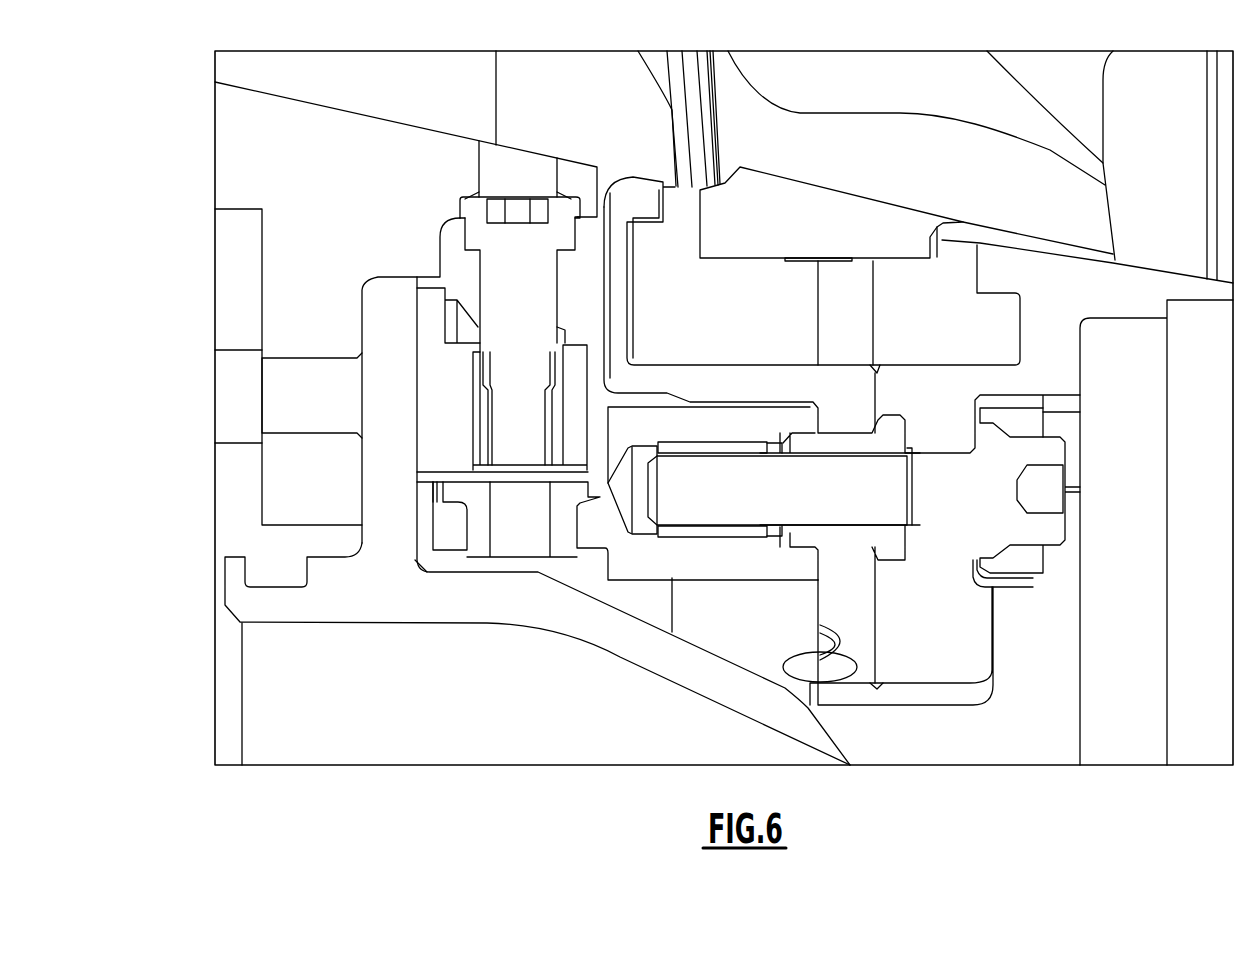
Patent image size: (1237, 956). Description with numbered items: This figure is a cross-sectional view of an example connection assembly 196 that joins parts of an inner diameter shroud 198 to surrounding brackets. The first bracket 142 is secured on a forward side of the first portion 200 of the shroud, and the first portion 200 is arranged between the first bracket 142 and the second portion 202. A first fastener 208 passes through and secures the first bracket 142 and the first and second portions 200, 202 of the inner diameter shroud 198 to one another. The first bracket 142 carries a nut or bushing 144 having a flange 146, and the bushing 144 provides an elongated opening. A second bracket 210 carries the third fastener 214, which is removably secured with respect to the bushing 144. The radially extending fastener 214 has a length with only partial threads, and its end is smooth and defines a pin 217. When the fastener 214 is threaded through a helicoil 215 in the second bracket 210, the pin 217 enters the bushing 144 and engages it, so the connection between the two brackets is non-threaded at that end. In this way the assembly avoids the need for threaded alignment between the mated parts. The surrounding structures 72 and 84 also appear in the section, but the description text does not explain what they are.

The casing wall 72 is at (241, 152).
The housing flange 84 is at (453, 603).
The first bracket 142 is at (655, 560).
The bushing 144 is at (562, 555).
The flange 146 is at (455, 494).
The connection assembly 196 is at (410, 585).
The inner diameter shroud 198 is at (1090, 365).
The first portion 200 is at (847, 555).
The second portion 202 is at (903, 562).
The first fastener 208 is at (913, 500).
The second bracket 210 is at (437, 365).
The third fastener 214 is at (512, 342).
The helicoil 215 is at (480, 422).
The pin 217 is at (513, 512).